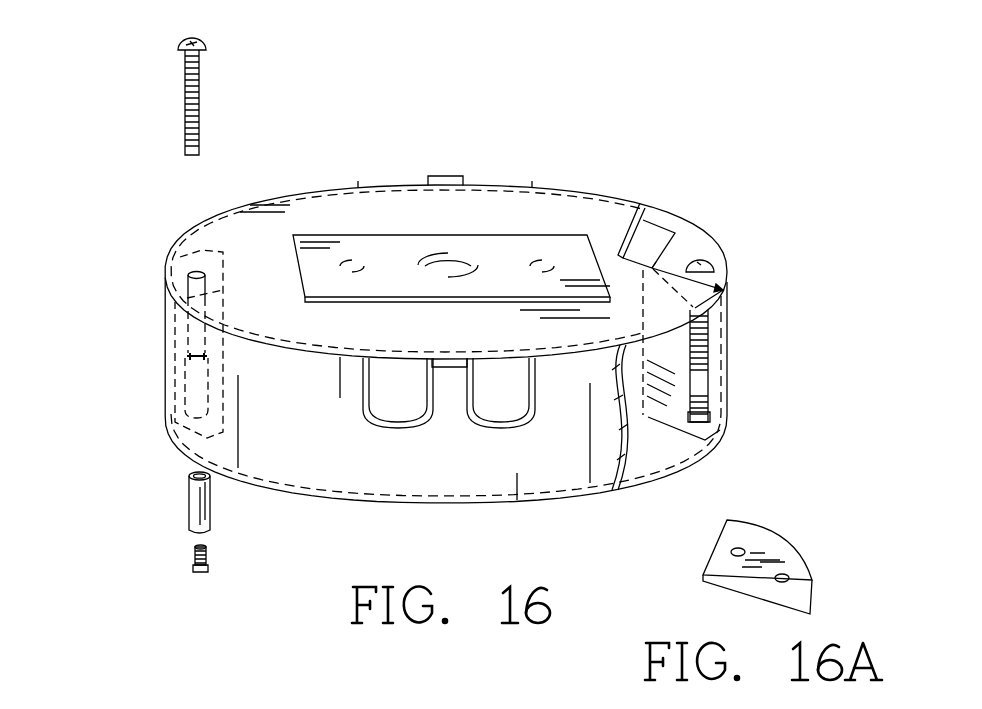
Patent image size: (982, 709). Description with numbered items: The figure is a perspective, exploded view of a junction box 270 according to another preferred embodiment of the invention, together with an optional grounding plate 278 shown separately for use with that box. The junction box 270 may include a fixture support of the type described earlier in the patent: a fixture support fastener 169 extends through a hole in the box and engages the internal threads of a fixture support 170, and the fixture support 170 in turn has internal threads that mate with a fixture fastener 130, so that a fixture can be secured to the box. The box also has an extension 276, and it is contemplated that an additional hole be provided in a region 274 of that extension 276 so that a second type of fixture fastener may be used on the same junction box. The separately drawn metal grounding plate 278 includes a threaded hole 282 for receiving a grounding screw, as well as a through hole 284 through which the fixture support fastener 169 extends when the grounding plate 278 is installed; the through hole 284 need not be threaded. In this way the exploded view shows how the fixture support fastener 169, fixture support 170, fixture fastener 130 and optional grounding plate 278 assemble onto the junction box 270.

In FIG. 16, the fixture fastener 130 is at (193, 553).
In FIG. 16, the fixture support fastener 169 is at (187, 77).
In FIG. 16, the fixture support 170 is at (193, 507).
In FIG. 16, the junction box 270 is at (158, 344).
In FIG. 16, the region 274 is at (692, 240).
In FIG. 16, the extension 276 is at (661, 231).
In FIG. 16A, the grounding plate 278 is at (736, 571).
In FIG. 16A, the threaded hole 282 is at (732, 552).
In FIG. 16A, the through hole 284 is at (789, 577).